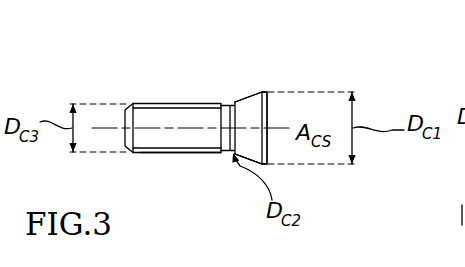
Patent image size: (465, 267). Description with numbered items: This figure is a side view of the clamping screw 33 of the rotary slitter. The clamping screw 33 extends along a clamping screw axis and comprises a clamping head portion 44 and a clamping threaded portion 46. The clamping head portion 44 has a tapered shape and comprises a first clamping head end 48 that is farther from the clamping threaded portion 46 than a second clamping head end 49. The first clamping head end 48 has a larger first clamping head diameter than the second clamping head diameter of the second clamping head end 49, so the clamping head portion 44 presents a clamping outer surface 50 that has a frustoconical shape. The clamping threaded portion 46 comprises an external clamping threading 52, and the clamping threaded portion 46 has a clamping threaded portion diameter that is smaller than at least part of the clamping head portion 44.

The clamping screw 33 is at (277, 82).
The clamping head portion 44 is at (246, 91).
The clamping threaded portion 46 is at (167, 99).
The first clamping head end 48 is at (261, 88).
The second clamping head end 49 is at (233, 97).
The clamping outer surface 50 is at (250, 162).
The external clamping threading 52 is at (172, 153).